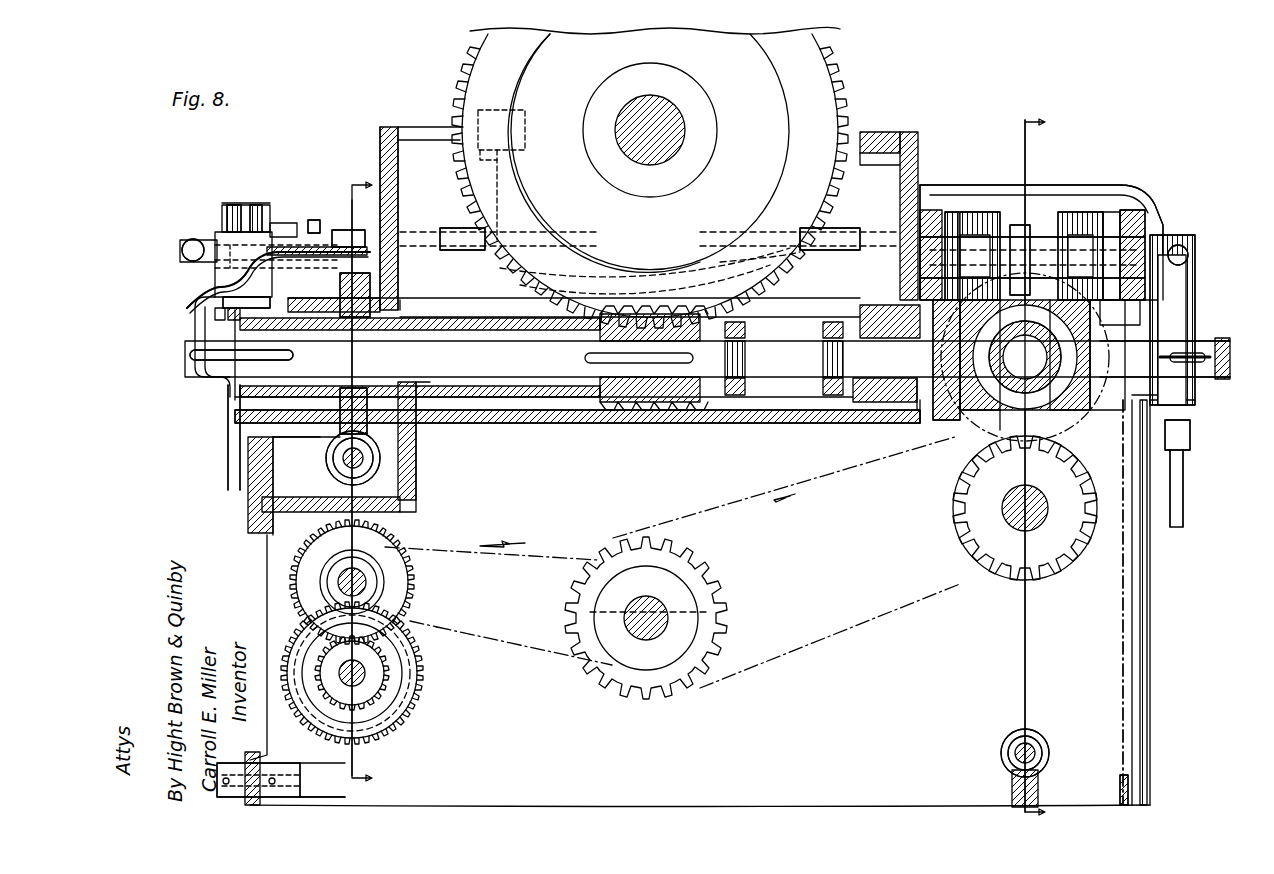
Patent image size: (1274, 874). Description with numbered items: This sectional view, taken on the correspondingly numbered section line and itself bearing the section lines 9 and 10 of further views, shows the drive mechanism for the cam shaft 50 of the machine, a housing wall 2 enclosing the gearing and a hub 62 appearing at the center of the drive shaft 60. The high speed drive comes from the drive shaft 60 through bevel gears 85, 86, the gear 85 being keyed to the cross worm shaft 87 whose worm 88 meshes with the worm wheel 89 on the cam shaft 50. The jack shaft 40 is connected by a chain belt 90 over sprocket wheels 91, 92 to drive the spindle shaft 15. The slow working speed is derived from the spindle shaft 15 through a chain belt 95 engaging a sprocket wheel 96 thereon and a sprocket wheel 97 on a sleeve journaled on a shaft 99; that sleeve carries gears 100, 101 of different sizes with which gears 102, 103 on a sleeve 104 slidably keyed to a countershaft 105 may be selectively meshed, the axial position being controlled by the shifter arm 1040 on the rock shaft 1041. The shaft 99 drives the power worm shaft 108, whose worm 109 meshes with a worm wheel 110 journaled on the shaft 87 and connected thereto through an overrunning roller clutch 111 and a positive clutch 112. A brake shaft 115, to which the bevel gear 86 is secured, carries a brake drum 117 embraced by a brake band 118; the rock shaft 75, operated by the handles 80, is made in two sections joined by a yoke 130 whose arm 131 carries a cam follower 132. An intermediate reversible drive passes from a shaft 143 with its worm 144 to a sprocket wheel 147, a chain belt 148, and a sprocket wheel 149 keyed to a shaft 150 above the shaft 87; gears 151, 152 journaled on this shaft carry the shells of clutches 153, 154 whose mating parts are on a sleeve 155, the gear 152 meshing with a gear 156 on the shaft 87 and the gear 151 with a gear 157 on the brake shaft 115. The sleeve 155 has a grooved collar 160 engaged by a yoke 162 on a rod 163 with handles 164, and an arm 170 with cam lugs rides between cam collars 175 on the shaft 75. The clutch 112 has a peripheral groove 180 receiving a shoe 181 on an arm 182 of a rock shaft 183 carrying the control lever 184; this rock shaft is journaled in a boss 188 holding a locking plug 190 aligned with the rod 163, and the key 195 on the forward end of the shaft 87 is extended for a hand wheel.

The housing wall 2 is at (383, 140).
The section line 9 is at (359, 485).
The section line 10 is at (1048, 468).
The spindle shaft 15 is at (660, 616).
The jack shaft 40 is at (1035, 556).
The cam shaft 50 is at (674, 124).
The drive shaft 60 is at (1060, 359).
The hub 62 is at (986, 359).
The rock shaft 75 is at (442, 240).
The main actuating handle 80 is at (228, 448).
The bevel gear 85 is at (960, 420).
The bevel gear 86 is at (1092, 420).
The cross worm shaft 87 is at (707, 359).
The worm 88 is at (612, 387).
The worm wheel 89 is at (656, 153).
The chain belt 90 is at (862, 505).
The sprocket wheel 91 is at (962, 535).
The sprocket wheel 92 is at (705, 600).
The chain belt 95 is at (532, 648).
The sprocket wheel 96 is at (700, 610).
The sprocket wheel 97 is at (360, 546).
The shaft 99 is at (366, 578).
The gear 100 is at (380, 560).
The gear 101 is at (362, 586).
The gear 102 is at (421, 673).
The gear 103 is at (382, 676).
The sleeve 104 is at (380, 700).
The countershaft 105 is at (368, 682).
The power worm shaft 108 is at (345, 462).
The worm 109 is at (376, 460).
The worm wheel 110 is at (364, 416).
The overrunning roller clutch 111 is at (360, 300).
The positive clutch 112 is at (270, 312).
The brake shaft 115 is at (1165, 359).
The brake drum 117 is at (1196, 292).
The brake band 118 is at (1192, 448).
The yoke 130 is at (790, 262).
The arm 131 is at (480, 158).
The cam follower 132 is at (500, 108).
The shaft 143 is at (1012, 734).
The worm 144 is at (1028, 745).
The sprocket wheel 147 is at (1120, 778).
The chain belt 148 is at (1122, 673).
The sprocket wheel 149 is at (1142, 215).
The shaft 150 is at (1142, 250).
The gear 151 is at (1117, 210).
The gear 152 is at (946, 215).
The clutch 153 is at (1082, 215).
The clutch 154 is at (975, 215).
The sleeve 155 is at (1030, 238).
The gear 156 is at (987, 323).
The gear 157 is at (1106, 436).
The grooved collar 160 is at (1025, 351).
The yoke 162 is at (1012, 225).
The rod 163 is at (832, 245).
The actuating handle 164 is at (188, 248).
The arm 170 is at (313, 218).
The cam collars 175 is at (290, 228).
The peripheral groove 180 is at (228, 398).
The shoe 181 is at (222, 328).
The arm 182 is at (225, 308).
The rock shaft 183 is at (236, 205).
The control lever 184 is at (262, 205).
The boss 188 is at (222, 281).
The locking plug 190 is at (215, 235).
The key 195 is at (220, 357).
The shifter arm 1040 is at (285, 760).
The rock shaft 1041 is at (295, 790).